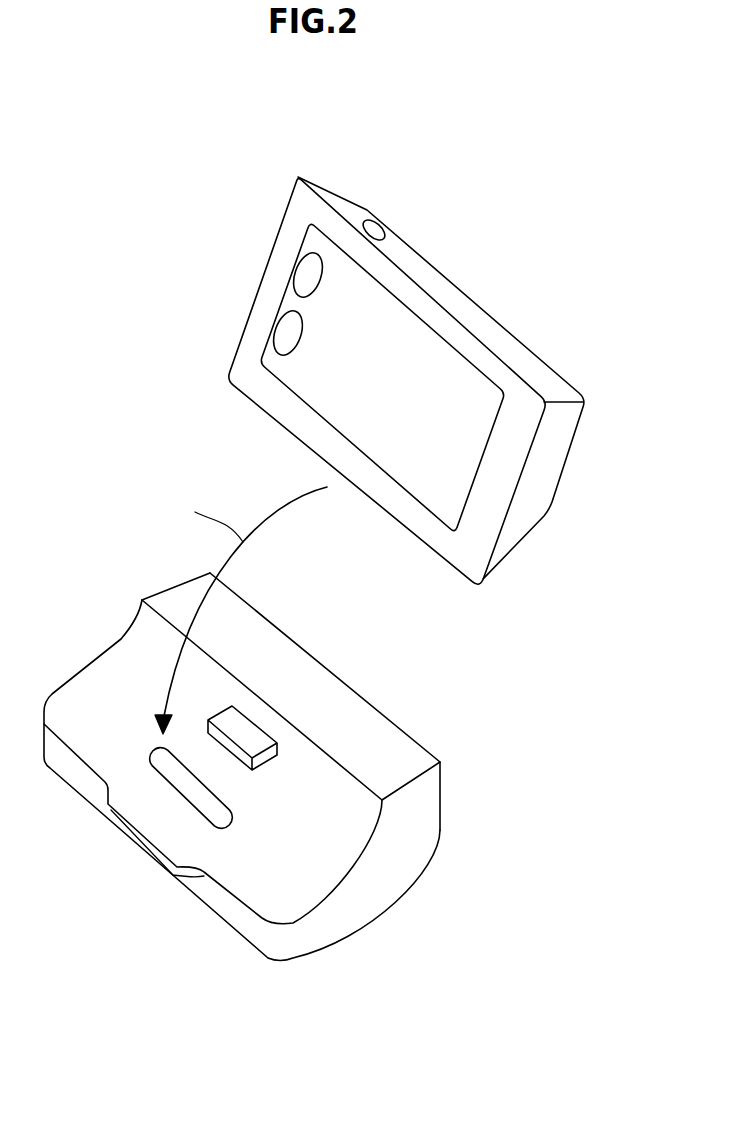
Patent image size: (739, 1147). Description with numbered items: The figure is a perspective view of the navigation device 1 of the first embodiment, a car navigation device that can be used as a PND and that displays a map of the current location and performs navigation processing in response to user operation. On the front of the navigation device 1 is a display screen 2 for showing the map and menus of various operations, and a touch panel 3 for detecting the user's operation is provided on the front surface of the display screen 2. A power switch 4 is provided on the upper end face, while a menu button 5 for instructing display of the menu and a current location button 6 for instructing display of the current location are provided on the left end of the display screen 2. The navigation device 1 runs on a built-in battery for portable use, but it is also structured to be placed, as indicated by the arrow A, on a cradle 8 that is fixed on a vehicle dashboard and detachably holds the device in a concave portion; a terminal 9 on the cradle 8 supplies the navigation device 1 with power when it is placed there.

The navigation device 1 is at (140, 188).
The display screen 2 is at (395, 317).
The touch panel 3 is at (428, 350).
The power switch 4 is at (377, 223).
The menu button 5 is at (303, 273).
The current location button 6 is at (282, 333).
The cradle 8 is at (435, 810).
The terminal 9 is at (183, 785).